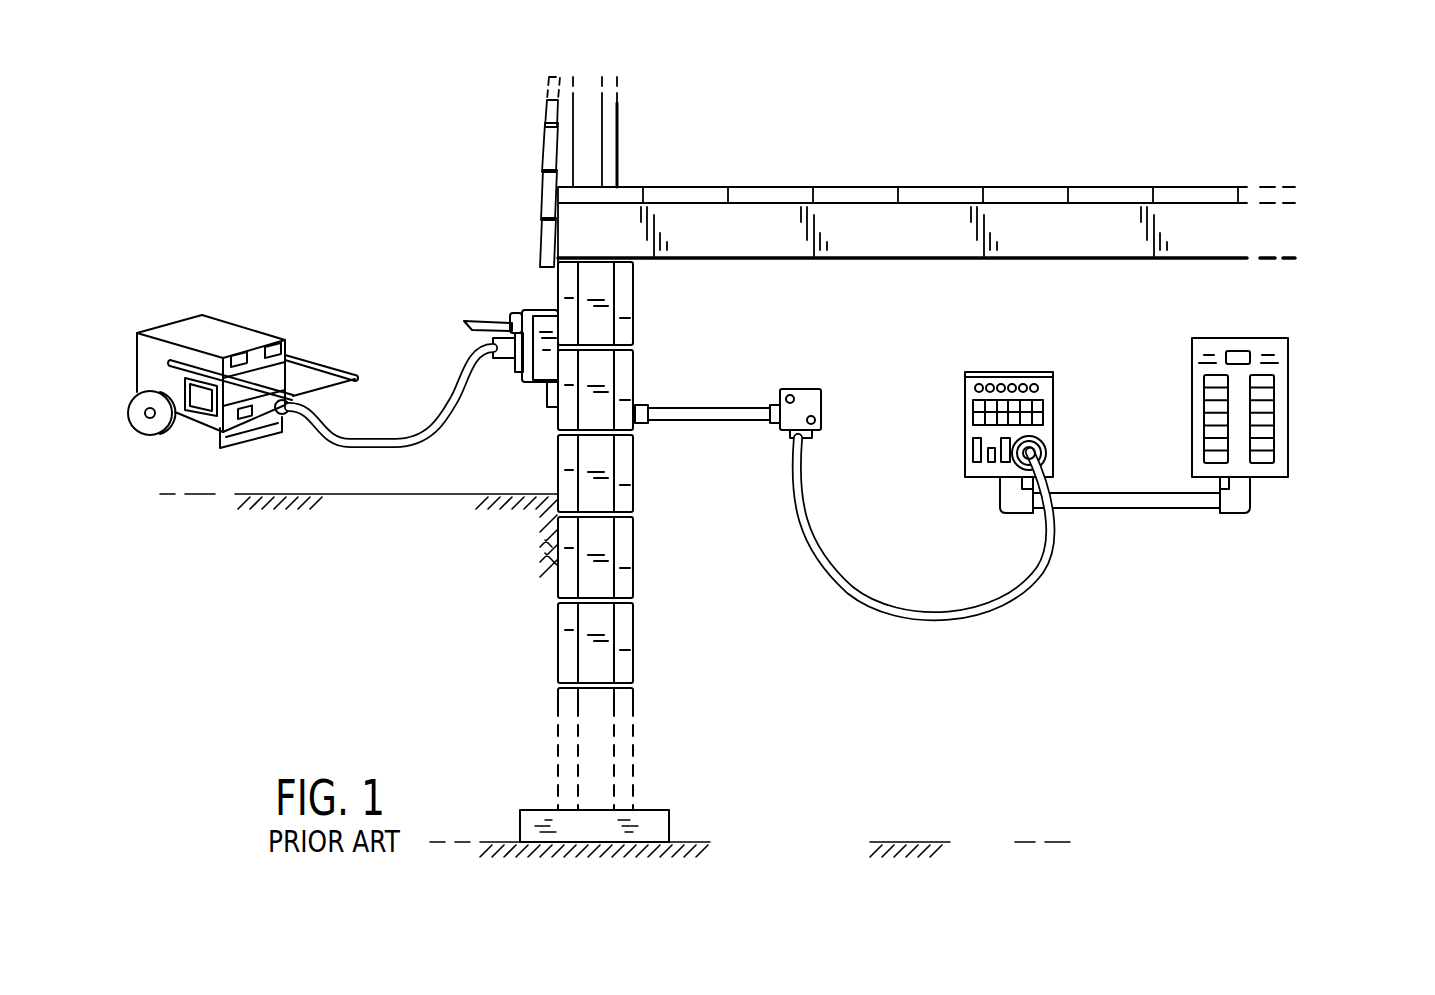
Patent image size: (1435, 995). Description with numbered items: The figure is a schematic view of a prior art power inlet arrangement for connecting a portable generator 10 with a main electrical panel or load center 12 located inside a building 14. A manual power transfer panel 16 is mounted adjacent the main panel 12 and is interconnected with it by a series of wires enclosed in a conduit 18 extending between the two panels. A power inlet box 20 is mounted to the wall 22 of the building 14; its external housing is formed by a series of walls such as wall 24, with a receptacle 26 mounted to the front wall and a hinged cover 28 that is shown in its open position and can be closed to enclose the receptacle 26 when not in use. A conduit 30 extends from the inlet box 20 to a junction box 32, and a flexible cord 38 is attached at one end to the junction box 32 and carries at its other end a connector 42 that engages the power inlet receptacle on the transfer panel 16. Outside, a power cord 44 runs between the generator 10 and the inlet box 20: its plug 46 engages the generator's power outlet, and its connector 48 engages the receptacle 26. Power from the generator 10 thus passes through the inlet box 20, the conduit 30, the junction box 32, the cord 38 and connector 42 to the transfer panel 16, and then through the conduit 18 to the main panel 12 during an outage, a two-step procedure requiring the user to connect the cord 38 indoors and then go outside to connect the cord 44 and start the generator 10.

The portable generator 10 is at (243, 288).
The main electrical panel or load center 12 is at (1335, 379).
The building 14 is at (505, 98).
The manual power transfer panel 16 is at (1014, 352).
The conduit 18 is at (1144, 512).
The power inlet box 20 is at (514, 280).
The wall 22 is at (558, 464).
The wall of housing 24 is at (546, 372).
The receptacle 26 is at (522, 377).
The cover 28 is at (495, 325).
The conduit 30 is at (669, 405).
The junction box 32 is at (801, 388).
The flexible cord 38 is at (950, 622).
The connector 42 is at (1046, 440).
The power cord 44 is at (376, 442).
The plug 46 is at (300, 403).
The connector 48 is at (488, 372).